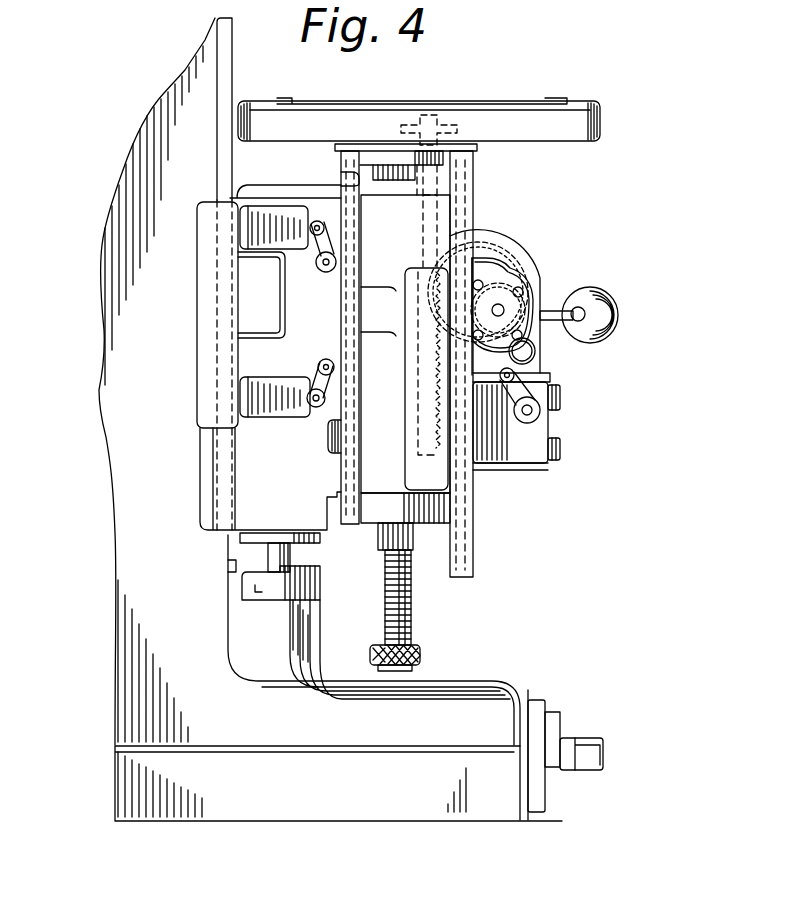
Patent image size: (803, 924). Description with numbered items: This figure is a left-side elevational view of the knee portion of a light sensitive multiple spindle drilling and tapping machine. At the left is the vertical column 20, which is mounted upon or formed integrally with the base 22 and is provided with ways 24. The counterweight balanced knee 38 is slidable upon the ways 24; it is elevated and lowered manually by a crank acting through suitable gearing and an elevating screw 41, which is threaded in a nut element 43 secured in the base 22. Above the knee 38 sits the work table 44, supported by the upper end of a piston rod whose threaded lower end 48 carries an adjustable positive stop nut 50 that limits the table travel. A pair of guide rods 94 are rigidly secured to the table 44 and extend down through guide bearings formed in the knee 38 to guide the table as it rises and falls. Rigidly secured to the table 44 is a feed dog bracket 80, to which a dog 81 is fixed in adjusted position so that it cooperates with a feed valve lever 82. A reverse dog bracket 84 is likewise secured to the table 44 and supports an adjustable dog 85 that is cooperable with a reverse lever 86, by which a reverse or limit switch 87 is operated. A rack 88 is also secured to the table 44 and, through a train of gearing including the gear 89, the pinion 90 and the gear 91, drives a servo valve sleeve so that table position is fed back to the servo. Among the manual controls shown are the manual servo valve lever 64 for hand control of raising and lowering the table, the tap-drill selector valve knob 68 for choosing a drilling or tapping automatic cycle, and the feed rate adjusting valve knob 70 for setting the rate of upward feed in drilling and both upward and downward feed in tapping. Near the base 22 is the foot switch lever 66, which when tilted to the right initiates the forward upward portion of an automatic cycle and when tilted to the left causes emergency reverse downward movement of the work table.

The vertical column 20 is at (125, 455).
The base 22 is at (233, 808).
The ways 24 is at (225, 79).
The knee 38 is at (252, 498).
The elevating screw 41 is at (270, 558).
The nut element 43 is at (253, 587).
The work table 44 is at (578, 130).
The lower end of the piston rod 48 is at (411, 607).
The positive stop nut 50 is at (418, 655).
The manual servo valve lever 64 is at (570, 302).
The foot switch lever 66 is at (596, 750).
The tap-drill selector valve knob 68 is at (560, 406).
The feed rate adjusting valve knob 70 is at (560, 447).
The feed dog bracket 80 is at (462, 510).
The dog 81 is at (500, 440).
The feed valve lever 82 is at (527, 388).
The reverse dog bracket 84 is at (355, 525).
The adjustable dog 85 is at (327, 442).
The reverse lever 86 is at (305, 382).
The reverse or limit switch 87 is at (272, 412).
The rack 88 is at (425, 378).
The gear 89 is at (505, 252).
The pinion 90 is at (512, 270).
The gear 91 is at (546, 292).
The guide rods 94 is at (388, 172).